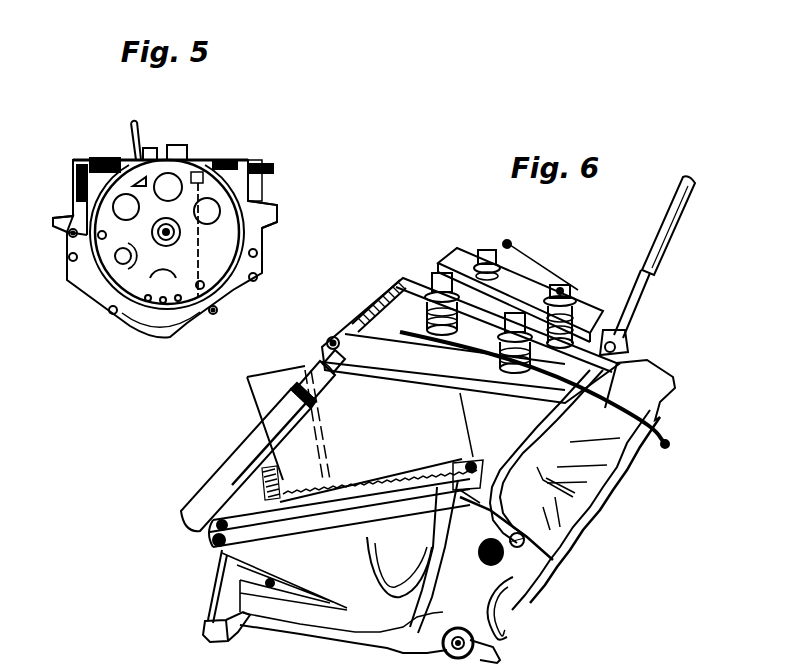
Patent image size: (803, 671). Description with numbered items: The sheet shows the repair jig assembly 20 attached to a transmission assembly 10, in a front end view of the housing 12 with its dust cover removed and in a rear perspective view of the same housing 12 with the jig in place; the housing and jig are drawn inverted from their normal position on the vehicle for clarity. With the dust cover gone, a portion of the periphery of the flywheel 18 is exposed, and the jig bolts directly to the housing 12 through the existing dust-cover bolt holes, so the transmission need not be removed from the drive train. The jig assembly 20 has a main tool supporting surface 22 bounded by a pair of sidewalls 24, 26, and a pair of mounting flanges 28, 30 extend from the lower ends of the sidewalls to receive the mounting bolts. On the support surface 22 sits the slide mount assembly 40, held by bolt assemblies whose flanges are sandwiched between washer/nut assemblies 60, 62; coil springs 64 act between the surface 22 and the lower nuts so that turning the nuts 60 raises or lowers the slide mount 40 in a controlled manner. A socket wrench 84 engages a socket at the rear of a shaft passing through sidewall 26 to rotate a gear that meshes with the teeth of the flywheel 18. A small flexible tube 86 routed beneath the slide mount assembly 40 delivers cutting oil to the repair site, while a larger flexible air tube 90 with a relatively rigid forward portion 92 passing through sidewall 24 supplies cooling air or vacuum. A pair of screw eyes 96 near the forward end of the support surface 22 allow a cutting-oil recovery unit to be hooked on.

In FIG. 5, the transmission assembly 10 is at (92, 312).
In FIG. 5, the housing 12 is at (136, 322).
In FIG. 5, the flywheel 18 is at (217, 273).
In FIG. 5, the repair jig assembly 20 is at (222, 137).
In FIG. 5, the main tool supporting surface 22 is at (117, 153).
In FIG. 5, the sidewall 24 is at (77, 190).
In FIG. 5, the sidewall 26 is at (253, 190).
In FIG. 5, the mounting flange 28 is at (70, 211).
In FIG. 5, the mounting flange 30 is at (270, 205).
In FIG. 6, the slide mount assembly 40 is at (619, 669).
In FIG. 6, the washer/nut assembly 60 is at (563, 297).
In FIG. 6, the washer/nut assembly 62 is at (584, 310).
In FIG. 6, the coil spring 64 is at (503, 355).
In FIG. 6, the socket wrench 84 is at (630, 318).
In FIG. 6, the flexible tube 86 is at (663, 436).
In FIG. 6, the flexible air tube 90 is at (230, 468).
In FIG. 6, the rigid forward portion 92 is at (333, 382).
In FIG. 6, the screw eye 96 is at (503, 240).